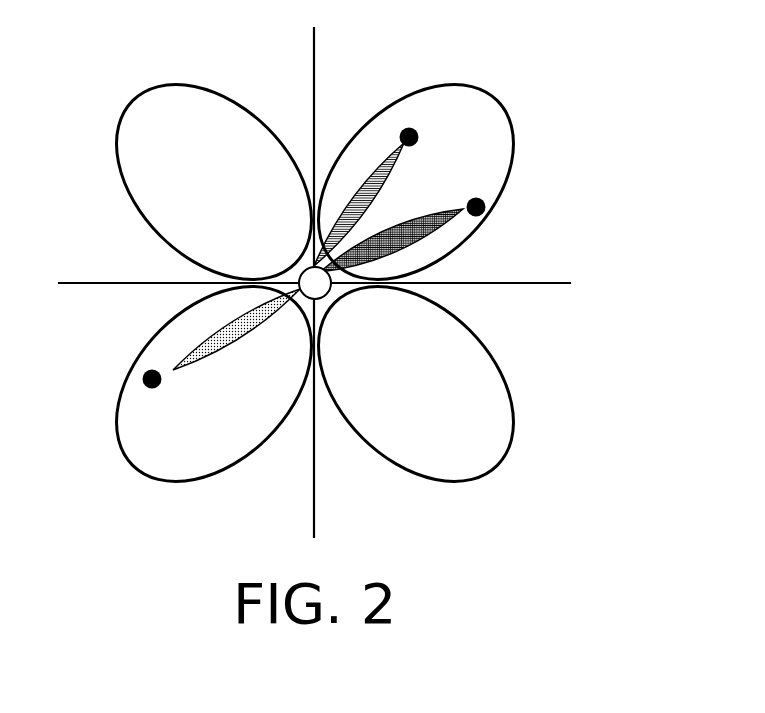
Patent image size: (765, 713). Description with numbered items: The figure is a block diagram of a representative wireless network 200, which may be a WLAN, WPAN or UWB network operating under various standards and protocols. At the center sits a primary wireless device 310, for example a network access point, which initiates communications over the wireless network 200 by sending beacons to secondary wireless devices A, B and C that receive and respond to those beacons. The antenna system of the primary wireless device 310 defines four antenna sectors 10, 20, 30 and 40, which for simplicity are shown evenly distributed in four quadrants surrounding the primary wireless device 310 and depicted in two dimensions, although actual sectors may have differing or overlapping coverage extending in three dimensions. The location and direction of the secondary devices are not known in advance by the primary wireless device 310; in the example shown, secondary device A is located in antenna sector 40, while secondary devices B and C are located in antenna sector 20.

The antenna sector 10 is at (515, 418).
The antenna sector 20 is at (517, 147).
The antenna sector 30 is at (115, 148).
The antenna sector 40 is at (115, 418).
The wireless network 200 is at (529, 73).
The primary wireless device 310 is at (327, 295).